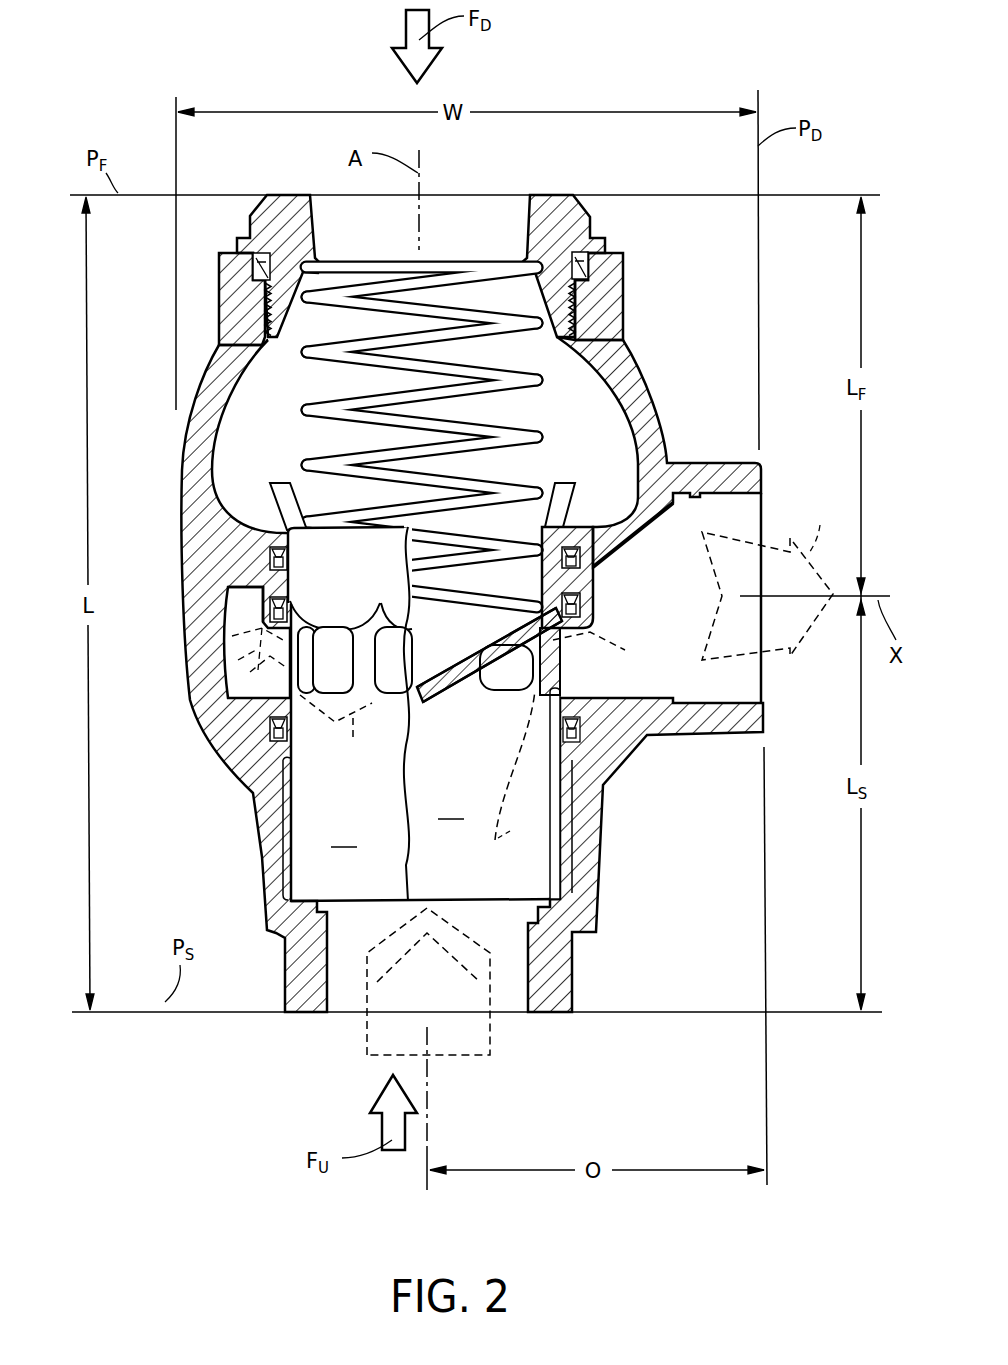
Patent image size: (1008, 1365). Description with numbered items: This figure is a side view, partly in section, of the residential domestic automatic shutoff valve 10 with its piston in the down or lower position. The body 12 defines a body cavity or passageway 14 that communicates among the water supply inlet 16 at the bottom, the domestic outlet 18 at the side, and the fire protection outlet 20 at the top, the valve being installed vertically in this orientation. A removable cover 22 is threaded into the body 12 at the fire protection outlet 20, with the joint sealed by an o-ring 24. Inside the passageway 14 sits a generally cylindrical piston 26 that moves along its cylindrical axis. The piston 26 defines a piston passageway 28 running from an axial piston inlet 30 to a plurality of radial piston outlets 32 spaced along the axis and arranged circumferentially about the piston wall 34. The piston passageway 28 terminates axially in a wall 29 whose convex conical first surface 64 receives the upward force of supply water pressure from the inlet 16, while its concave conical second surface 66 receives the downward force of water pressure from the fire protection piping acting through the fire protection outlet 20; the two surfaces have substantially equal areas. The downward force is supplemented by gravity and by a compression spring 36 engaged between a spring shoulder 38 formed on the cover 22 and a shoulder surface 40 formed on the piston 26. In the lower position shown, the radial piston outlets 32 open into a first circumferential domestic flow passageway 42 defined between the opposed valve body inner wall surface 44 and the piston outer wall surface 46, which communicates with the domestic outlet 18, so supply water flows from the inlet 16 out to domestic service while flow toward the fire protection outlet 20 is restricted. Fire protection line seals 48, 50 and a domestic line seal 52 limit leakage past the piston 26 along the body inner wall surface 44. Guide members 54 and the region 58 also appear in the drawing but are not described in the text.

The residential domestic automatic shutoff valve 10 is at (112, 1040).
The body 12 is at (205, 538).
The body cavity or passageway 14 is at (318, 381).
The water supply inlet 16 is at (500, 993).
The domestic outlet 18 is at (736, 689).
The fire protection outlet 20 is at (489, 214).
The removable cover 22 is at (286, 211).
The o-ring 24 is at (602, 266).
The piston 26 is at (344, 836).
The piston passageway 28 is at (451, 808).
The wall 29 is at (452, 676).
The axial piston inlet 30 is at (343, 912).
The radial piston outlets 32 is at (340, 628).
The piston wall 34 is at (563, 870).
The compression spring 36 is at (518, 312).
The spring shoulder 38 is at (322, 264).
The shoulder surface 40 is at (548, 593).
The first circumferential domestic flow passageway 42 is at (230, 684).
The valve body inner wall surface 44 is at (235, 633).
The piston outer wall surface 46 is at (289, 803).
The fire protection line seal 48 is at (582, 561).
The fire protection line seal 50 is at (582, 613).
The domestic line seal 52 is at (578, 732).
The guide member 54 is at (275, 508).
The spring chamber 58 is at (608, 471).
The first surface 64 is at (447, 701).
The second surface 66 is at (462, 670).